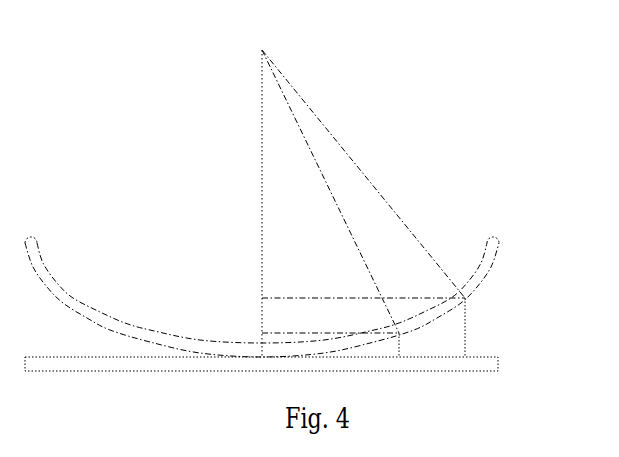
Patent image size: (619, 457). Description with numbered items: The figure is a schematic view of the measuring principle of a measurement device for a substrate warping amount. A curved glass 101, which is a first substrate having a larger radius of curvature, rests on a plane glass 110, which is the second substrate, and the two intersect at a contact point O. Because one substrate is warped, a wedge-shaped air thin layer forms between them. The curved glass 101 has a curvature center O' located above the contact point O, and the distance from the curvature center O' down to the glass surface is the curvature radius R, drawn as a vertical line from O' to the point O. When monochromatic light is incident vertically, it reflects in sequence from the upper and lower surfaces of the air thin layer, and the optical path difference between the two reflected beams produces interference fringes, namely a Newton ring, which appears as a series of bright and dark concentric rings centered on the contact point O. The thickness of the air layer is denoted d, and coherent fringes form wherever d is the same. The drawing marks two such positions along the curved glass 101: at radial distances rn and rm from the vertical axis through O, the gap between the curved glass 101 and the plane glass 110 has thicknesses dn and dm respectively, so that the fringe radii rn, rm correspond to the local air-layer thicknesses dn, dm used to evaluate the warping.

The first substrate 101 is at (497, 255).
The second substrate 110 is at (498, 364).
The curvature radius R is at (251, 203).
The curvature center O' is at (359, 176).
The contact point O is at (262, 368).
The radial distance of point n rn is at (363, 285).
The radial distance of point m rm is at (330, 321).
The sag at point m dm is at (414, 345).
The sag at point n dn is at (477, 327).